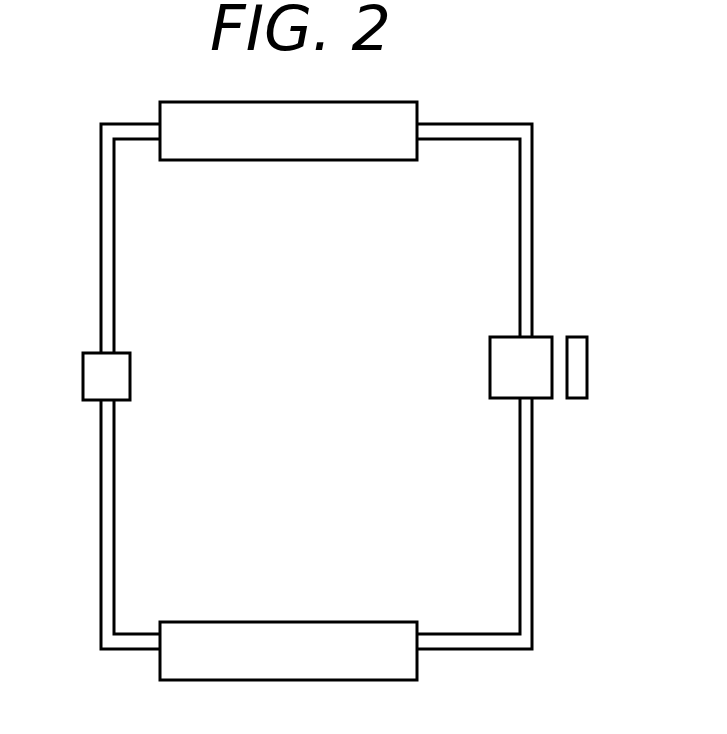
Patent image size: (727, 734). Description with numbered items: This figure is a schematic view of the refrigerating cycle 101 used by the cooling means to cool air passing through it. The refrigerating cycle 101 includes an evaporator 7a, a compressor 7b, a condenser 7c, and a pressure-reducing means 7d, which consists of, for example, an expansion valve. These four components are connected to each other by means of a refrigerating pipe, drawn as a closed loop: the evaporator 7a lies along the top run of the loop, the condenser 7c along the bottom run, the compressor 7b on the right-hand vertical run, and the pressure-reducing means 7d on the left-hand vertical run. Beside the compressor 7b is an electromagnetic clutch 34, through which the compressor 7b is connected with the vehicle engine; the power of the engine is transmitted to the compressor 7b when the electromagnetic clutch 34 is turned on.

The refrigerating cycle 101 is at (590, 172).
The evaporator 7a is at (348, 110).
The compressor 7b is at (542, 335).
The condenser 7c is at (412, 662).
The pressure-reducing means 7d is at (92, 382).
The electromagnetic clutch 34 is at (587, 368).